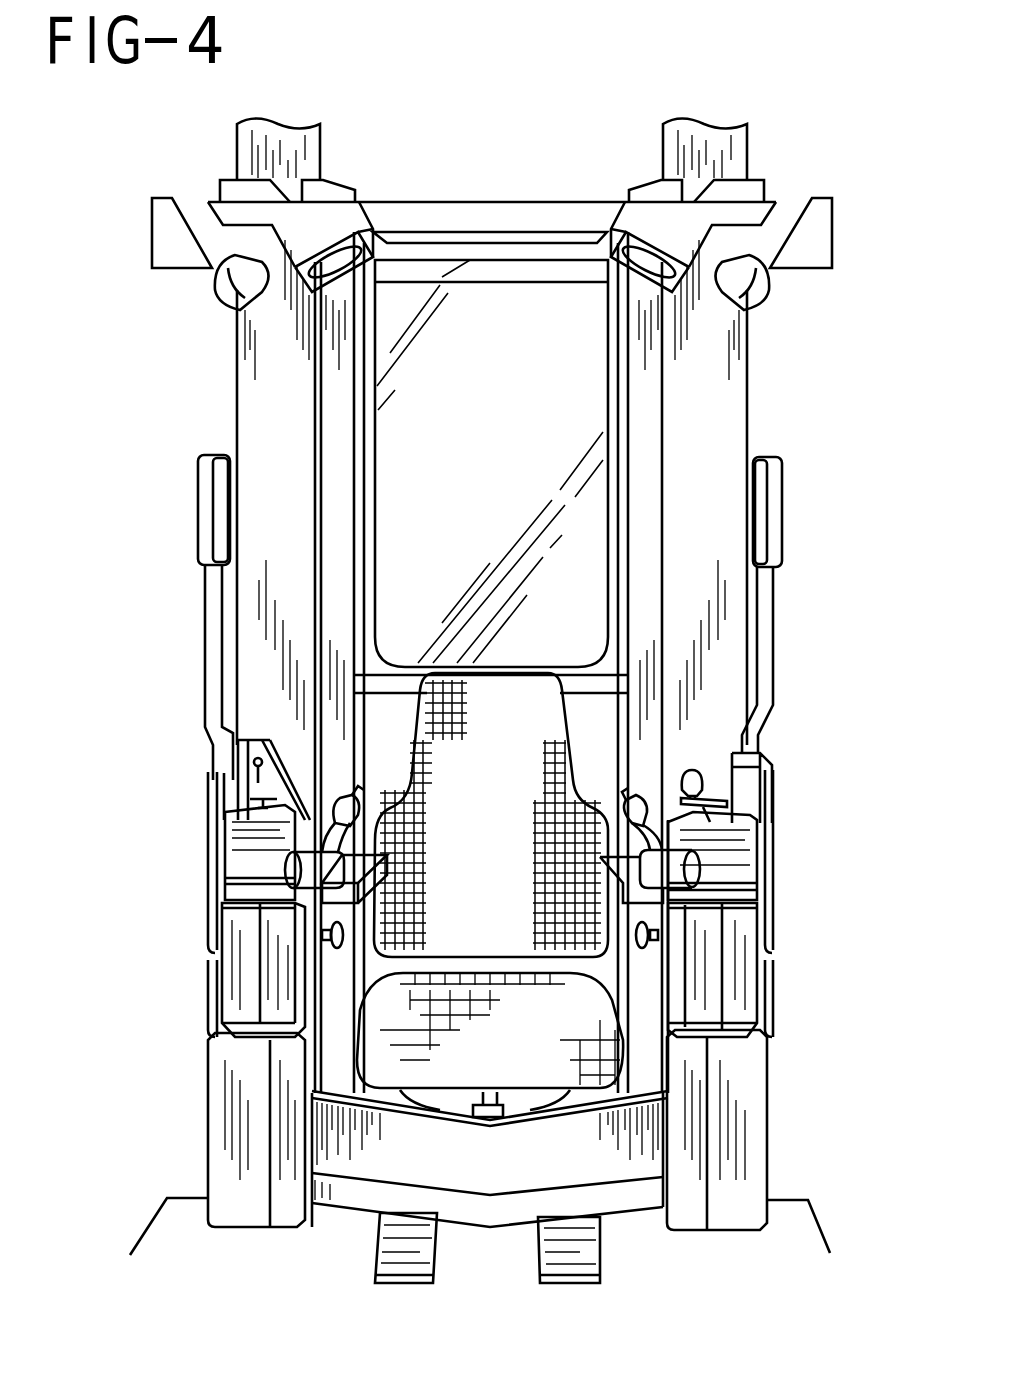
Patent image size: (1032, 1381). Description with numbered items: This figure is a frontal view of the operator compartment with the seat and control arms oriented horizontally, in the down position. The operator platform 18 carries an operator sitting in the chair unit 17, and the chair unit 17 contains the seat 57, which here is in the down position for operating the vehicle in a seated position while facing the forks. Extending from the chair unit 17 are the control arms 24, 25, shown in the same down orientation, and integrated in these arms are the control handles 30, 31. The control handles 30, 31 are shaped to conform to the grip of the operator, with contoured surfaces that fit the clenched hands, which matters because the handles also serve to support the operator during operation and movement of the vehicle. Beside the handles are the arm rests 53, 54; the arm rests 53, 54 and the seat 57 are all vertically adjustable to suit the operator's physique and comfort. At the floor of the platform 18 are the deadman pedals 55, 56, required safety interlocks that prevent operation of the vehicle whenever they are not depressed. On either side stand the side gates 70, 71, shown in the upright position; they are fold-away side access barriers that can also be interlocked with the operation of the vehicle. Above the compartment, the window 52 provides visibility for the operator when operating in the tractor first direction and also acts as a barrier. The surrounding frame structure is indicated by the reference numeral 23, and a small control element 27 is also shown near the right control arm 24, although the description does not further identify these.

The overhead guard 23 is at (172, 306).
The window 52 is at (560, 376).
The side gate 71 is at (200, 488).
The side gate 70 is at (785, 495).
The chair unit 17 is at (430, 728).
The control knob 27 is at (703, 771).
The control handle 31 is at (325, 828).
The control handle 30 is at (685, 823).
The control arm 25 is at (288, 880).
The control arm 24 is at (765, 895).
The arm rest 54 is at (338, 903).
The arm rest 53 is at (650, 900).
The seat 57 is at (619, 1085).
The operator platform 18 is at (822, 1220).
The deadman pedal 56 is at (405, 1283).
The deadman pedal 55 is at (570, 1285).